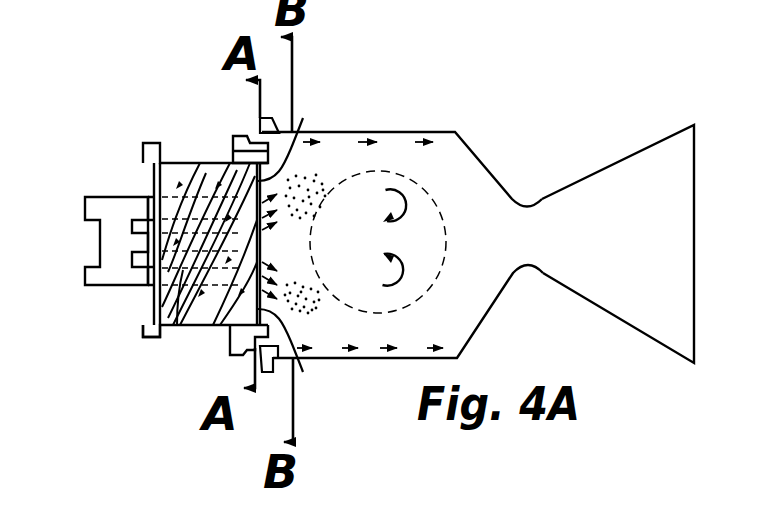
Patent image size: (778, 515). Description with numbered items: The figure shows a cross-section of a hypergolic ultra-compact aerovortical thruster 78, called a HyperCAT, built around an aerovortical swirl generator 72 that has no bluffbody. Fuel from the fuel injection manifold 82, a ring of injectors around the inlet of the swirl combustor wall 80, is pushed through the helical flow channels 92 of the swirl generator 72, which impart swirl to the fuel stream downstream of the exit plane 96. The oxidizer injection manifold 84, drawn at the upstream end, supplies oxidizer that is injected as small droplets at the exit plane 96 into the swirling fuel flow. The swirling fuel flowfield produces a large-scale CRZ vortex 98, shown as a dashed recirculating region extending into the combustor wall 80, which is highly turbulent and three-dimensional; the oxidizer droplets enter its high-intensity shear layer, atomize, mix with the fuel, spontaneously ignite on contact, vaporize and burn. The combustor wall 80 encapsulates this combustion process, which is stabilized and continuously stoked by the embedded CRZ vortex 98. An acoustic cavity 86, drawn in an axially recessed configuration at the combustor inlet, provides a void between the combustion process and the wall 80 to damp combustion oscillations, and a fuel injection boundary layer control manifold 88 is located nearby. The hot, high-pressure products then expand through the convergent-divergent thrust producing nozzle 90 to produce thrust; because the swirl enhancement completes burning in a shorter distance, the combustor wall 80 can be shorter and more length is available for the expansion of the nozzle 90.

The hypergolic ultra-compact aerovortical thruster 78 is at (110, 88).
The aerovortical swirl generator 72 is at (181, 163).
The fuel injection manifold 82 is at (128, 337).
The oxidizer injection manifold 84 is at (82, 199).
The acoustic cavity 86 is at (231, 151).
The fuel injection boundary layer control manifold 88 is at (261, 128).
The helical flow channels 92 is at (213, 325).
The exit plane 96 is at (300, 133).
The swirl combustor wall 80 is at (402, 140).
The convergent-divergent thrust producing nozzle 90 is at (583, 181).
The CRZ vortex 98 is at (447, 238).